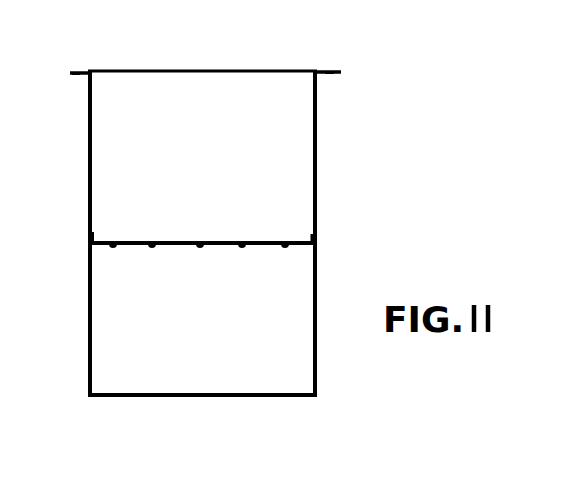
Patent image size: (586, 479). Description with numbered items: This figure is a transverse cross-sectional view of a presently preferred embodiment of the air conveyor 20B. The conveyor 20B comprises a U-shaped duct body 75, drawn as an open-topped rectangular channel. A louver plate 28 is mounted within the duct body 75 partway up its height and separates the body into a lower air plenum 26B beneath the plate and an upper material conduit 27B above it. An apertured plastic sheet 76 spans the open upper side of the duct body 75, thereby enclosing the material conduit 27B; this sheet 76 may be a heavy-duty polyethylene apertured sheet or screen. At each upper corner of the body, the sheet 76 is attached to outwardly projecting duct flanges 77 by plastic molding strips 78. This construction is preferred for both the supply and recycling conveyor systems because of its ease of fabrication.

The air conveyor 20B is at (258, 52).
The apertured plastic sheet 76 is at (137, 69).
The duct flanges 77 is at (88, 69).
The plastic molding strips 78 is at (75, 76).
The upper material conduit 27B is at (227, 168).
The louver plate 28 is at (222, 241).
The U-shaped duct body 75 is at (318, 236).
The lower air plenum 26B is at (227, 322).